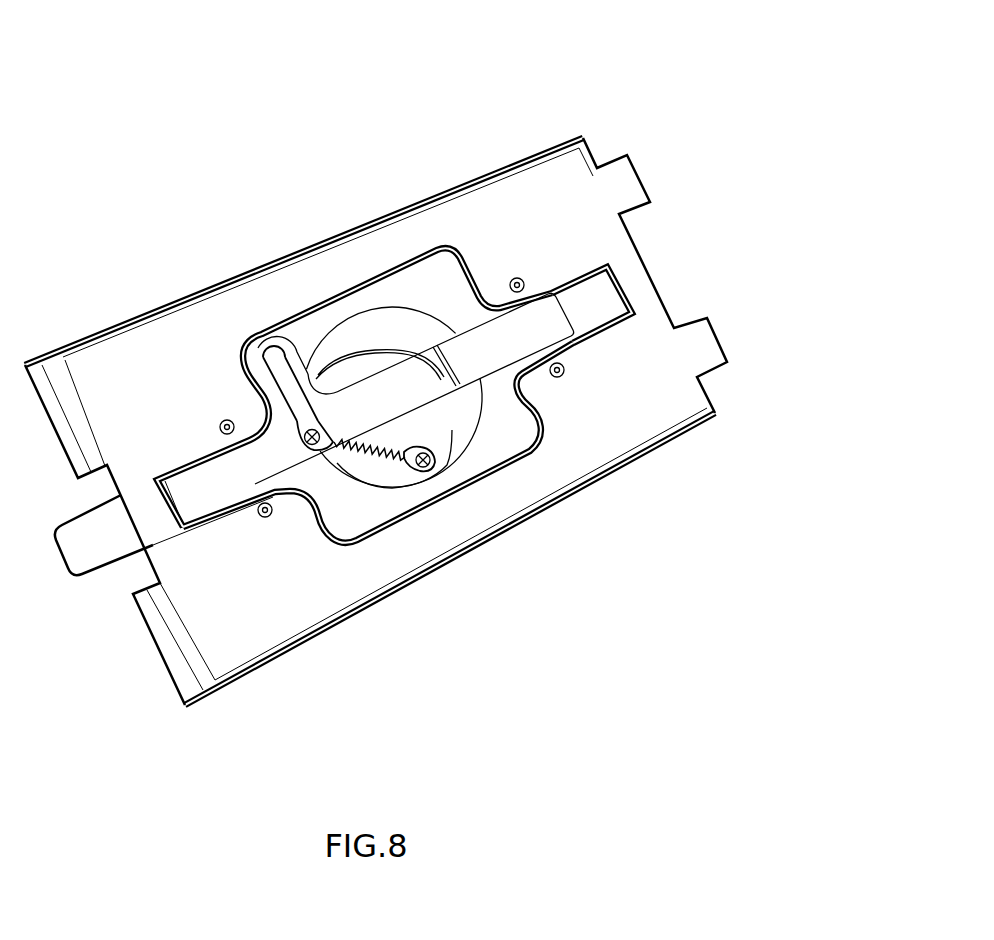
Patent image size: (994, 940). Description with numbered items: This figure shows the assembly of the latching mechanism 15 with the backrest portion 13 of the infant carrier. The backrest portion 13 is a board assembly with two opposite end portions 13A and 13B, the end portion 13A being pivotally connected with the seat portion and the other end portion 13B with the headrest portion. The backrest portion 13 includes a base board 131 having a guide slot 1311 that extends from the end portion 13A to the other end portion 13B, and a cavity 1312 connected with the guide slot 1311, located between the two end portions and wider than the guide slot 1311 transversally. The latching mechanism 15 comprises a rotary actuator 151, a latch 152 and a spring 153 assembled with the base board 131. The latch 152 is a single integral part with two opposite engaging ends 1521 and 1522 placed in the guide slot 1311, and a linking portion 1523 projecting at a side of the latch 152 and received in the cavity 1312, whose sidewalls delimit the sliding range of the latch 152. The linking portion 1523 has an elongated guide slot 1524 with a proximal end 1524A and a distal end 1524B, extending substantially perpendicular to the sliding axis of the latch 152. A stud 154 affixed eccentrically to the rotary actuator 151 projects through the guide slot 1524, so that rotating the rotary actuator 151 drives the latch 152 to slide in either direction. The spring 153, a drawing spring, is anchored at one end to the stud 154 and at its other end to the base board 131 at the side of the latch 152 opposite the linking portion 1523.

The backrest portion 13 is at (62, 53).
The end portion 13A is at (78, 363).
The end portion 13B is at (583, 138).
The base board 131 is at (533, 233).
The guide slot 1311 is at (588, 300).
The cavity 1312 is at (405, 285).
The latching mechanism 15 is at (588, 575).
The rotary actuator 151 is at (413, 428).
The latch 152 is at (443, 402).
The engaging end 1521 is at (545, 330).
The engaging end 1522 is at (83, 547).
The linking portion 1523 is at (258, 348).
The elongated guide slot 1524 is at (288, 387).
The proximal end 1524A is at (300, 441).
The distal end 1524B is at (267, 350).
The spring 153 is at (370, 453).
The stud 154 is at (313, 447).